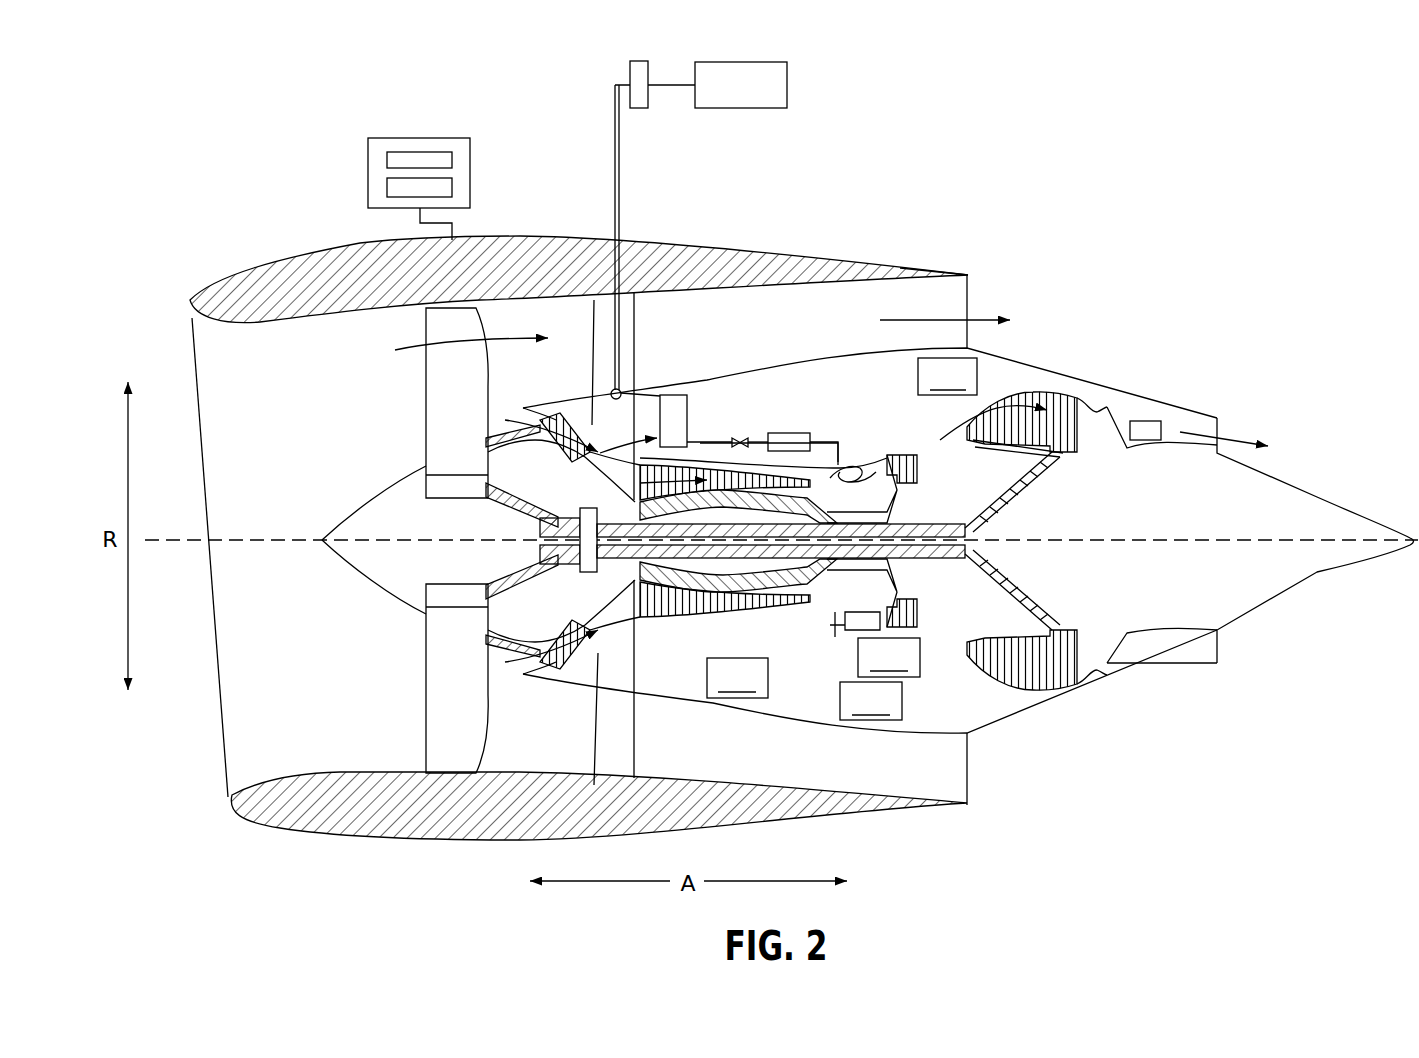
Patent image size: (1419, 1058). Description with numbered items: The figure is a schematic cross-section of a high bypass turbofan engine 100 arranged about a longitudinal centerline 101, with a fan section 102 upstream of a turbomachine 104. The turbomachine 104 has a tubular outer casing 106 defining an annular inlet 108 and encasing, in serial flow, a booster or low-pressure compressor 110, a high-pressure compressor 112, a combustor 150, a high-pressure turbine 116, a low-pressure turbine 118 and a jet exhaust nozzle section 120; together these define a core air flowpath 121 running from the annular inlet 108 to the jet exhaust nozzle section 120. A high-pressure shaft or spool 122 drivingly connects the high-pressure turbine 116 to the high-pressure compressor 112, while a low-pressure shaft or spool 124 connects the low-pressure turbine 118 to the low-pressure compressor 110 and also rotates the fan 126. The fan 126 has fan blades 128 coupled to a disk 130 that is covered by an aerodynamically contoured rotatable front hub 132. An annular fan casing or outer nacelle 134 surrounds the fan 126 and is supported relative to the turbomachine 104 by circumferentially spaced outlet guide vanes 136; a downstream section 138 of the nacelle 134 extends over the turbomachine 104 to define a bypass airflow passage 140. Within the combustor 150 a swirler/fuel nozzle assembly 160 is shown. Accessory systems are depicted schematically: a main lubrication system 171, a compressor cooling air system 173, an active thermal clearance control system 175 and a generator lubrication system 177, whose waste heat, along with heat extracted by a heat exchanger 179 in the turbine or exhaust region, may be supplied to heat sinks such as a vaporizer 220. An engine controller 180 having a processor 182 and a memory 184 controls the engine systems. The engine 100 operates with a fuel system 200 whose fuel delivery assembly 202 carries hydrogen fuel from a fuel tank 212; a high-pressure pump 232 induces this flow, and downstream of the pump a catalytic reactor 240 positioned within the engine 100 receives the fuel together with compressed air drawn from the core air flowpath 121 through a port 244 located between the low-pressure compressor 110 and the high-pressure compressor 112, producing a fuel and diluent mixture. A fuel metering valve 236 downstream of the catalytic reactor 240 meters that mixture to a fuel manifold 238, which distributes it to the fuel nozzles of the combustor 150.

The turbofan engine 100 is at (1122, 256).
The longitudinal centerline 101 is at (1175, 522).
The fan section 102 is at (368, 333).
The turbomachine 104 is at (742, 338).
The tubular outer casing 106 is at (805, 720).
The annular inlet 108 is at (540, 657).
The low-pressure compressor 110 is at (573, 672).
The high-pressure compressor 112 is at (668, 612).
The high-pressure turbine 116 is at (920, 618).
The low-pressure turbine 118 is at (1050, 660).
The jet exhaust nozzle section 120 is at (1122, 658).
The core air flowpath 121 is at (607, 628).
The high-pressure shaft or spool 122 is at (897, 487).
The low-pressure shaft or spool 124 is at (1002, 495).
The fan 126 is at (372, 407).
The fan blades 128 is at (422, 692).
The disk 130 is at (426, 473).
The rotatable front hub 132 is at (327, 552).
The outer nacelle 134 is at (473, 842).
The outlet guide vanes 136 is at (643, 328).
The downstream section 138 is at (878, 262).
The bypass airflow passage 140 is at (860, 327).
The combustor 150 is at (860, 470).
The swirler/fuel nozzle assembly 160 is at (838, 465).
The main lubrication system 171 is at (947, 376).
The compressor cooling air system 173 is at (737, 678).
The active thermal clearance control system 175 is at (889, 657).
The generator lubrication system 177 is at (871, 701).
The heat exchanger 179 is at (1150, 420).
The engine controller 180 is at (470, 173).
The processor 182 is at (385, 158).
The memory 184 is at (385, 185).
The fuel system 200 is at (533, 107).
The fuel delivery assembly 202 is at (619, 187).
The fuel tank 212 is at (788, 83).
The vaporizer 220 is at (628, 80).
The high-pressure pump 232 is at (612, 388).
The fuel metering valve 236 is at (742, 436).
The fuel manifold 238 is at (787, 432).
The catalytic reactor 240 is at (665, 396).
The port 244 is at (626, 442).